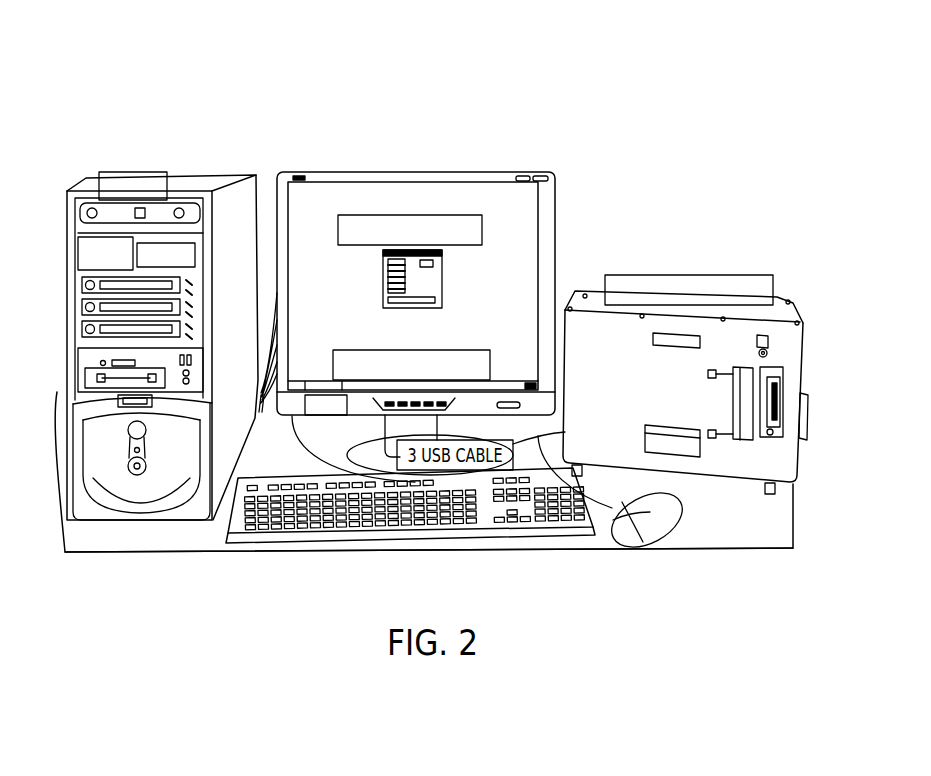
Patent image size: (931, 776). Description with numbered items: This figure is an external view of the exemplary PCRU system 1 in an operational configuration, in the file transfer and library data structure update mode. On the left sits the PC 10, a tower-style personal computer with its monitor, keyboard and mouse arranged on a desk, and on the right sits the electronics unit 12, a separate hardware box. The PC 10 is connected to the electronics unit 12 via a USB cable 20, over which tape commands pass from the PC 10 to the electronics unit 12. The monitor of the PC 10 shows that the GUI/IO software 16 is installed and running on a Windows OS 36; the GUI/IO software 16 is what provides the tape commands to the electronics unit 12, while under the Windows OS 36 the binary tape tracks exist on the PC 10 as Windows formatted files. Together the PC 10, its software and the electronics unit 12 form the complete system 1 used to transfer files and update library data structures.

The PCRU system 1 is at (566, 76).
The PC 10 is at (192, 186).
The GUI/IO software 16 is at (366, 184).
The Windows OS 36 is at (345, 394).
The USB cable 20 is at (578, 528).
The electronics unit 12 is at (796, 305).